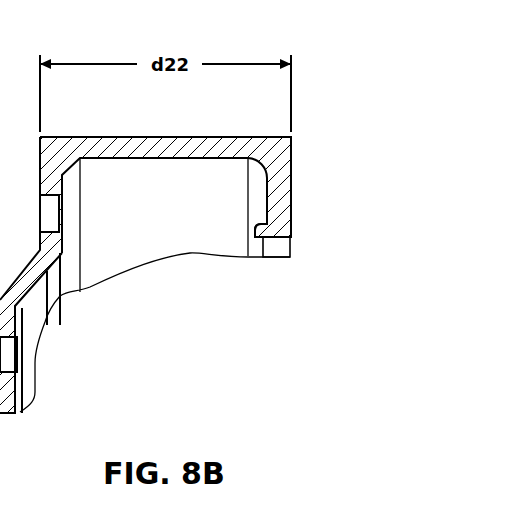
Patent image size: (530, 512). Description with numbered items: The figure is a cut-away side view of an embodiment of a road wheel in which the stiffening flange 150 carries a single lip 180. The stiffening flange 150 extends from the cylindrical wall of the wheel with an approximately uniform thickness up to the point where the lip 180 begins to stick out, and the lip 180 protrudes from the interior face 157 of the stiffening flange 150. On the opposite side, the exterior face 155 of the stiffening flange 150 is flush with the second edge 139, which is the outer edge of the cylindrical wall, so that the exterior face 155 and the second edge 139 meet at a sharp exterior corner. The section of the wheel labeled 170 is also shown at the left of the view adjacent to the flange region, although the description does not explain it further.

The second edge 139 is at (292, 142).
The exterior face 155 is at (292, 189).
The stiffening flange 150 is at (287, 229).
The interior face 157 is at (267, 193).
The lip 180 is at (259, 232).
The housing wall 170 is at (31, 262).